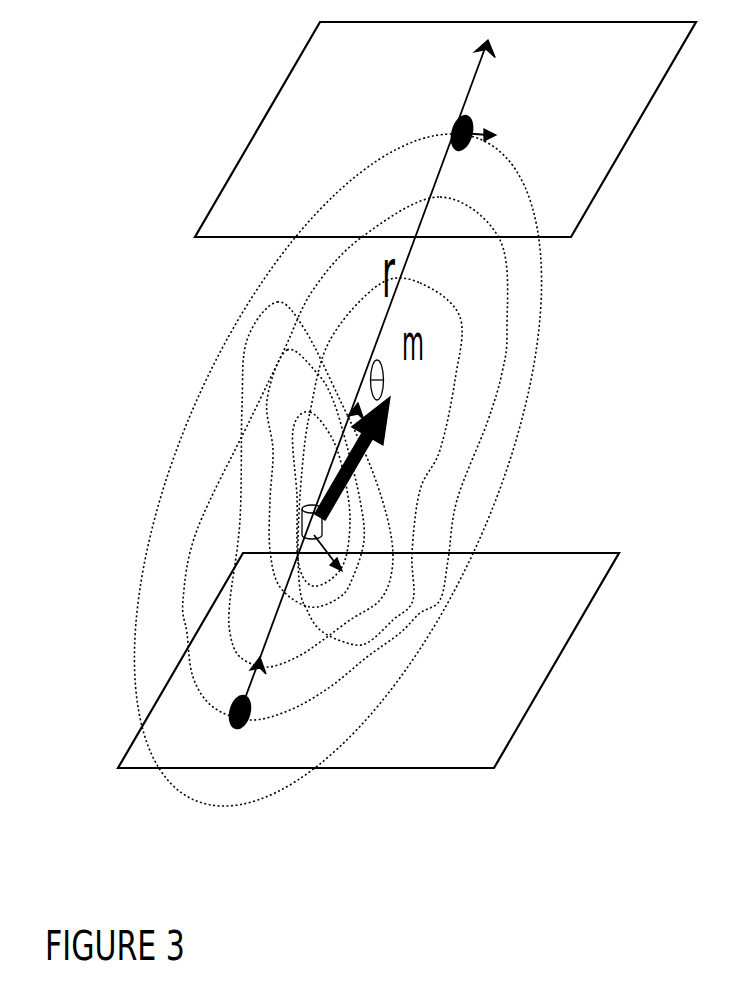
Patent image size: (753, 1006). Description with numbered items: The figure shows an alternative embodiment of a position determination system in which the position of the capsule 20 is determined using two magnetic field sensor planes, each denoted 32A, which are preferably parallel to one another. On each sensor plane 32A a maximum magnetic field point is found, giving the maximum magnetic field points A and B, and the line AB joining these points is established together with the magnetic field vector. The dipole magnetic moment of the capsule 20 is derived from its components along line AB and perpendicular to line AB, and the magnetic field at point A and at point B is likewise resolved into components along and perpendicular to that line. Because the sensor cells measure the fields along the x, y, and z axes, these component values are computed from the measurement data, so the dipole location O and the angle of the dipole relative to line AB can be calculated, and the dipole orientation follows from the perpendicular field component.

The capsule 20 is at (294, 516).
The sensor plane 32A is at (360, 124).
The maximum magnetic field point A is at (224, 720).
The maximum magnetic field point B is at (453, 96).
The dipole location O is at (322, 576).